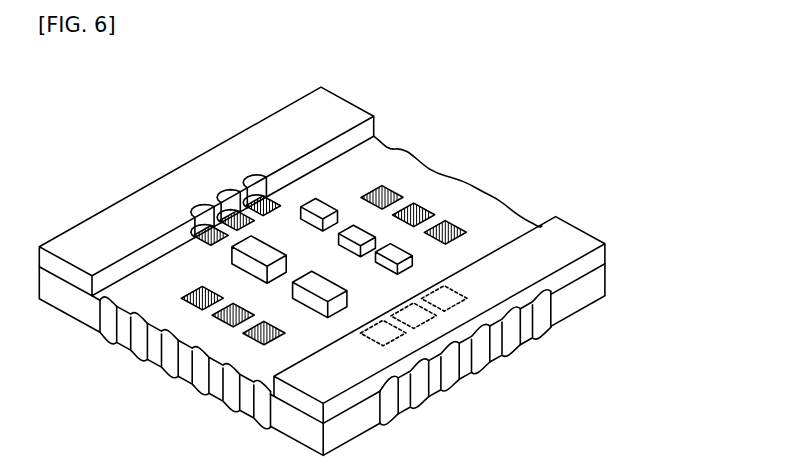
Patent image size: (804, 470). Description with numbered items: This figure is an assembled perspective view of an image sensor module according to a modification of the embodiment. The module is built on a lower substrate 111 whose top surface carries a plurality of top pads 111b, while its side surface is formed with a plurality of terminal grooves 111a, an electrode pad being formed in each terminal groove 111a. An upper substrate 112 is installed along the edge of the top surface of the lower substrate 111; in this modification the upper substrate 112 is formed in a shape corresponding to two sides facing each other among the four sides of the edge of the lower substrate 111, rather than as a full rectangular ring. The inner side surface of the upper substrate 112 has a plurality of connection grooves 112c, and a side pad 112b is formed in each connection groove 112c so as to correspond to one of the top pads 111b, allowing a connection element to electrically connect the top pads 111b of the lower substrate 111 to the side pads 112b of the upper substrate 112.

The lower substrate 111 is at (391, 160).
The terminal groove 111a is at (510, 335).
The top pad 111b is at (458, 227).
The upper substrate 112 is at (336, 110).
The side pad 112b is at (197, 212).
The connection groove 112c is at (267, 177).